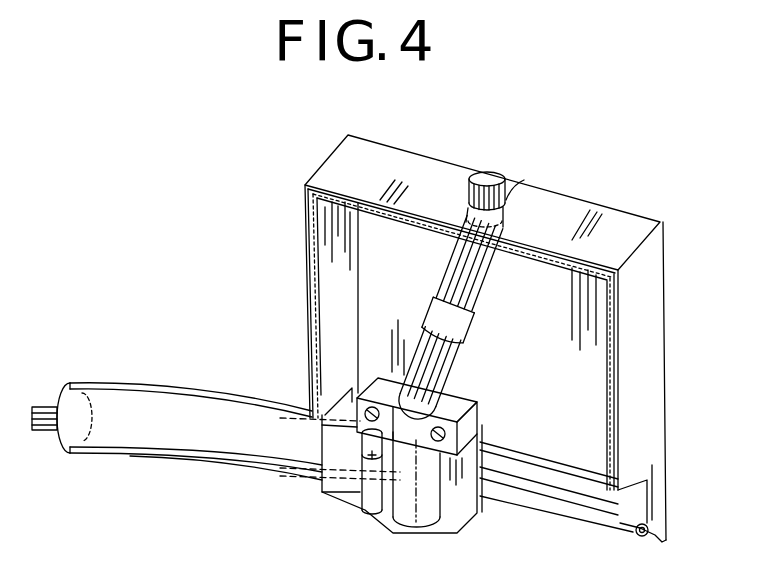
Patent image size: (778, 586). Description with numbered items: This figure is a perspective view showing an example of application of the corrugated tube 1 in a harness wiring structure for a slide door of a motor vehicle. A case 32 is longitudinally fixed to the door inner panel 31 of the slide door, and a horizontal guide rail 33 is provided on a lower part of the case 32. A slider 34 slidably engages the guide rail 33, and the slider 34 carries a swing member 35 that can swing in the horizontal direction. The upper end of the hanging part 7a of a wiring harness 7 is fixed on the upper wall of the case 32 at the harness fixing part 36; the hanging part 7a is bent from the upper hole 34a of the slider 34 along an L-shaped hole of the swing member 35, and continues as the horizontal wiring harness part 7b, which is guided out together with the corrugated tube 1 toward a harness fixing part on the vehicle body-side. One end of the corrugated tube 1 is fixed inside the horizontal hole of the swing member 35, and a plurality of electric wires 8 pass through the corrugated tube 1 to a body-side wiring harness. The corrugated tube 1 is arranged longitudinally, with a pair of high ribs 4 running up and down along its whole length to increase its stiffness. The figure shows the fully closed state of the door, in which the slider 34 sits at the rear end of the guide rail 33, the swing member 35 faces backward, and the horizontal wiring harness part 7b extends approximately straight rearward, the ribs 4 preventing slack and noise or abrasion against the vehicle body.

The corrugated tube 1 is at (232, 443).
The ribs 4 is at (168, 453).
The wiring harness 7 is at (492, 298).
The hanging part 7a is at (462, 348).
The horizontal wiring harness part 7b is at (172, 382).
The electric wires 8 is at (42, 432).
The door inner panel 31 is at (692, 378).
The case 32 is at (643, 340).
The guide rail 33 is at (572, 498).
The slider 34 is at (483, 512).
The upper hole 34a is at (445, 403).
The swing member 35 is at (403, 505).
The harness fixing part 36 is at (506, 185).